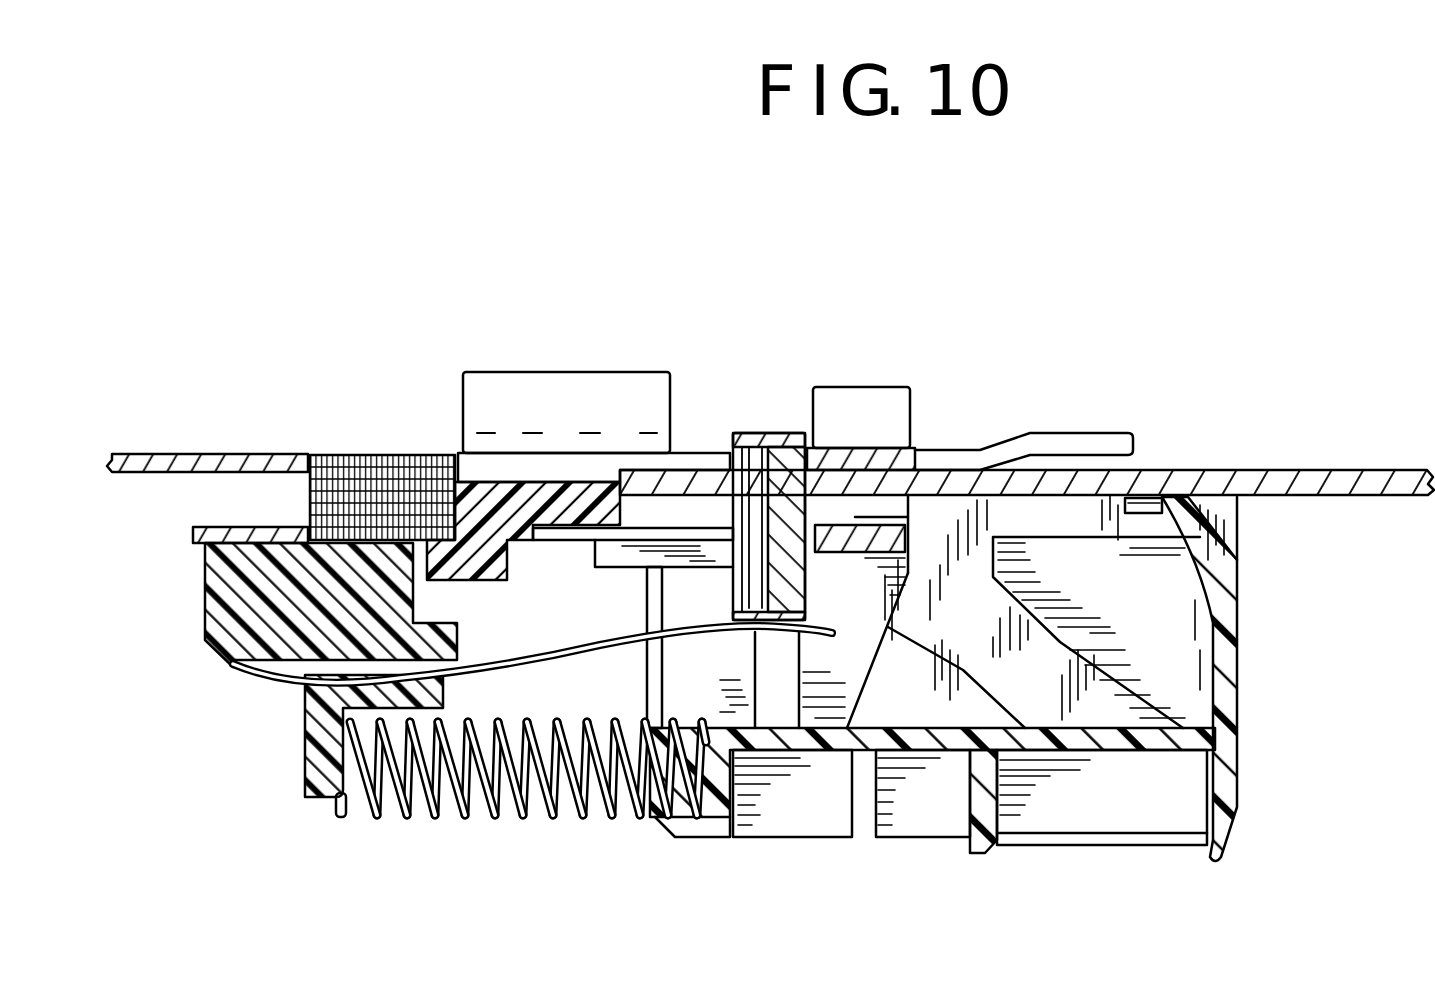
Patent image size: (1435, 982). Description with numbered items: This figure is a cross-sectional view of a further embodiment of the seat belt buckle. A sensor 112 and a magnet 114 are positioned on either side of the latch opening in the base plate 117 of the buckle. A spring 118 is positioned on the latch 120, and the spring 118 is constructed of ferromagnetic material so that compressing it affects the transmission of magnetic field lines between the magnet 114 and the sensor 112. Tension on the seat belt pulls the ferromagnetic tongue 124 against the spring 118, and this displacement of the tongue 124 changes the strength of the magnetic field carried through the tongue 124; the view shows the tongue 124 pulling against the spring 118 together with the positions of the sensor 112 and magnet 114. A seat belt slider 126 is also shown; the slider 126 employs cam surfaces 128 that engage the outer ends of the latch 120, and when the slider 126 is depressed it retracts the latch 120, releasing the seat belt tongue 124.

The sensor 112 is at (650, 372).
The magnet 114 is at (870, 392).
The base plate 117 is at (248, 453).
The spring 118 is at (755, 433).
The latch 120 is at (758, 673).
The tongue 124 is at (648, 470).
The seat belt slider 126 is at (1238, 690).
The cam surfaces 128 is at (920, 648).